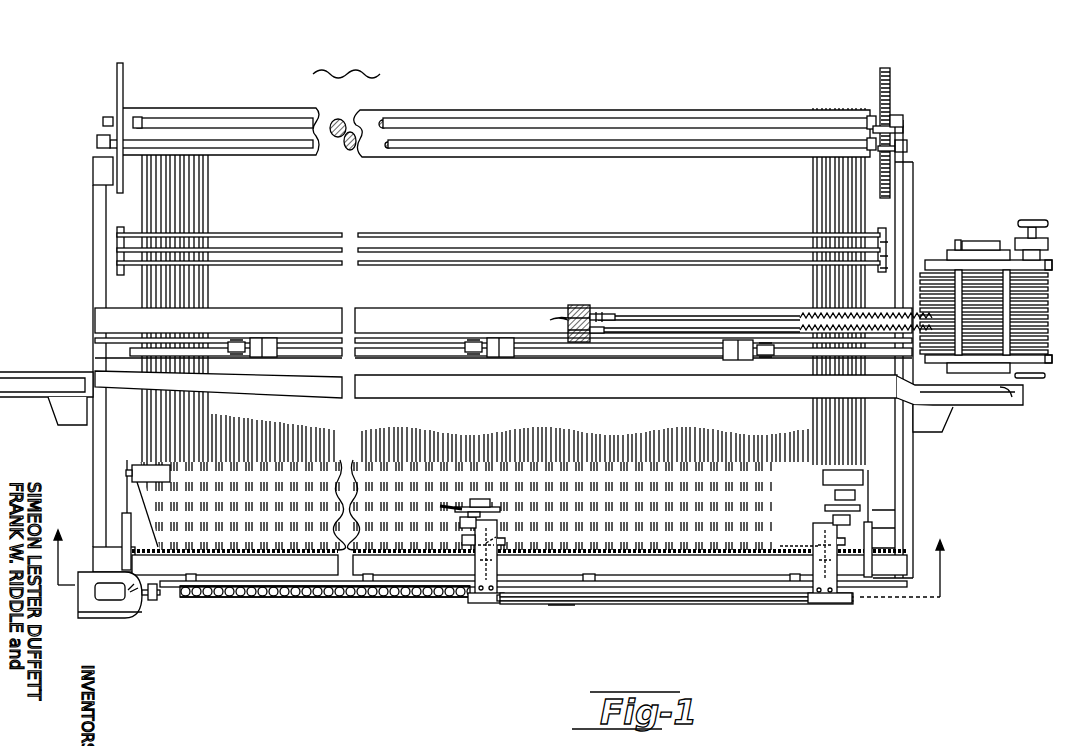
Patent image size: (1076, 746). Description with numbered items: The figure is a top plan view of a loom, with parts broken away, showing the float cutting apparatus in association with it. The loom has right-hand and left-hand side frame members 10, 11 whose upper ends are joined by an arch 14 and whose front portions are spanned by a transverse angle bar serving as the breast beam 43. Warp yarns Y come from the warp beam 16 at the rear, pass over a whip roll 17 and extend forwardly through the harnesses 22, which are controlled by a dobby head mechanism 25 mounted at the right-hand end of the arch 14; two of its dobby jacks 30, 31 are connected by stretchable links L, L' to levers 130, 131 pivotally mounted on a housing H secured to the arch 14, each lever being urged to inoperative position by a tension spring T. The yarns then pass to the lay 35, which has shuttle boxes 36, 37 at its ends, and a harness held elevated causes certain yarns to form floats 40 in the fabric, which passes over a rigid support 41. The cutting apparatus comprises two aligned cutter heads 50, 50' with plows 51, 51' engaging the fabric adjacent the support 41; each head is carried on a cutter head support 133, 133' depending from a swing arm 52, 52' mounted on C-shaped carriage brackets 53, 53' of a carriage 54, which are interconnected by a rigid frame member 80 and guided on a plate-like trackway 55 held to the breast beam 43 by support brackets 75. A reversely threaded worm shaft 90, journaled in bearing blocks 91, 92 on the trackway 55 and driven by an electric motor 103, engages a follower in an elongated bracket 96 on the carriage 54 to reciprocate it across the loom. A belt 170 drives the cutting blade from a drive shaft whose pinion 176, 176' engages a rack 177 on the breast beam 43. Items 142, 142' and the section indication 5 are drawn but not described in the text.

The warp yarns Y is at (203, 186).
The warp beam 16 is at (361, 103).
The whip roll 17 is at (265, 113).
The left-hand side frame member 11 is at (92, 471).
The right-hand side frame member 10 is at (906, 482).
The arch 14 is at (326, 310).
The harnesses 22 is at (420, 354).
The stretchable link L' is at (699, 307).
The stretchable link L is at (699, 352).
The dobby jack 30 is at (924, 338).
The dobby jack 31 is at (950, 323).
The tension spring T is at (584, 308).
The housing H is at (565, 305).
The lever 131 is at (614, 315).
The lever 130 is at (587, 333).
The lay 35 is at (490, 393).
The shuttle box 37 is at (58, 372).
The shuttle box 36 is at (974, 408).
The dobby head mechanism 25 is at (987, 237).
The floats 40 is at (617, 486).
The rack 177 is at (268, 534).
The breast beam 43 is at (916, 568).
The support brackets 75 is at (194, 576).
The trackway 55 is at (296, 581).
The worm shaft 90 is at (252, 597).
The electric motor 103 is at (133, 612).
The bearing block 92 is at (172, 602).
The rigid support 41 is at (113, 516).
The carriage bracket 53 is at (486, 575).
The cutter head support 133 is at (450, 522).
The plate 142 is at (485, 501).
The plow 51 is at (435, 498).
The cutter head 50 is at (469, 489).
The swing arm 52 is at (516, 532).
The belt 170 is at (465, 543).
The pinion 176 is at (514, 540).
The bearing block 91 is at (508, 602).
The elongated bracket 96 is at (549, 602).
The carriage 54 is at (611, 601).
The rigid frame member 80 is at (706, 607).
The carriage bracket 53' is at (830, 576).
The plate 142' is at (816, 476).
The cutter head 50' is at (822, 491).
The plow 51' is at (821, 503).
The cutter head support 133' is at (815, 517).
The swing arm 52' is at (807, 535).
The pinion 176' is at (782, 543).
The section line 5 is at (501, 551).